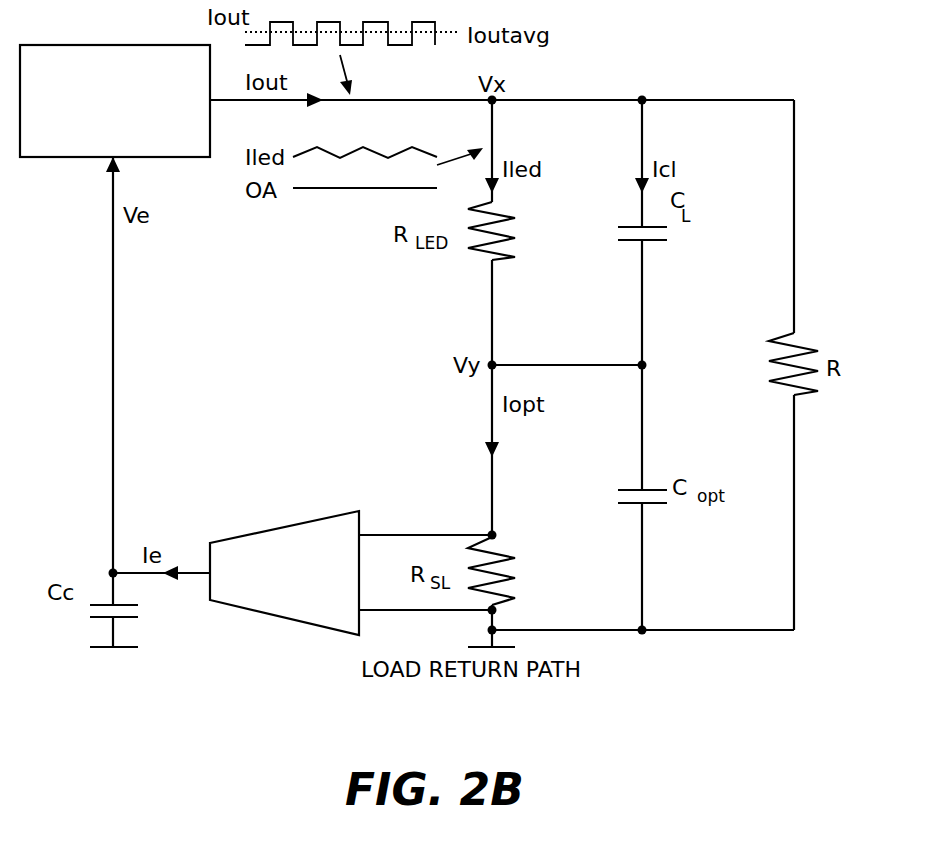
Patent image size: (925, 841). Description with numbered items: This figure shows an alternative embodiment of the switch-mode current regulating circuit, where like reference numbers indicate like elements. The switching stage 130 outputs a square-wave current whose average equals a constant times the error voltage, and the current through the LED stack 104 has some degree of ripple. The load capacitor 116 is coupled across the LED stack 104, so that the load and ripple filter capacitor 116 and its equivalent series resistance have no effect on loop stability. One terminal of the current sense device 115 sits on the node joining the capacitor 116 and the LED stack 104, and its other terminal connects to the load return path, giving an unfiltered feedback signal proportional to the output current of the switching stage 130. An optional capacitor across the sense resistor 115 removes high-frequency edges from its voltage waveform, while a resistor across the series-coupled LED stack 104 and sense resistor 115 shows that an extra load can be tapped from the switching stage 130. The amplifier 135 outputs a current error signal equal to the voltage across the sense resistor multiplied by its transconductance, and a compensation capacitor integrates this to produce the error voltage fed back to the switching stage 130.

The switching stage 130 is at (113, 45).
The LED stack 104 is at (507, 247).
The load capacitor 116 is at (670, 233).
The current sense device (RSL) 115 is at (505, 580).
The amplifier 135 is at (282, 525).